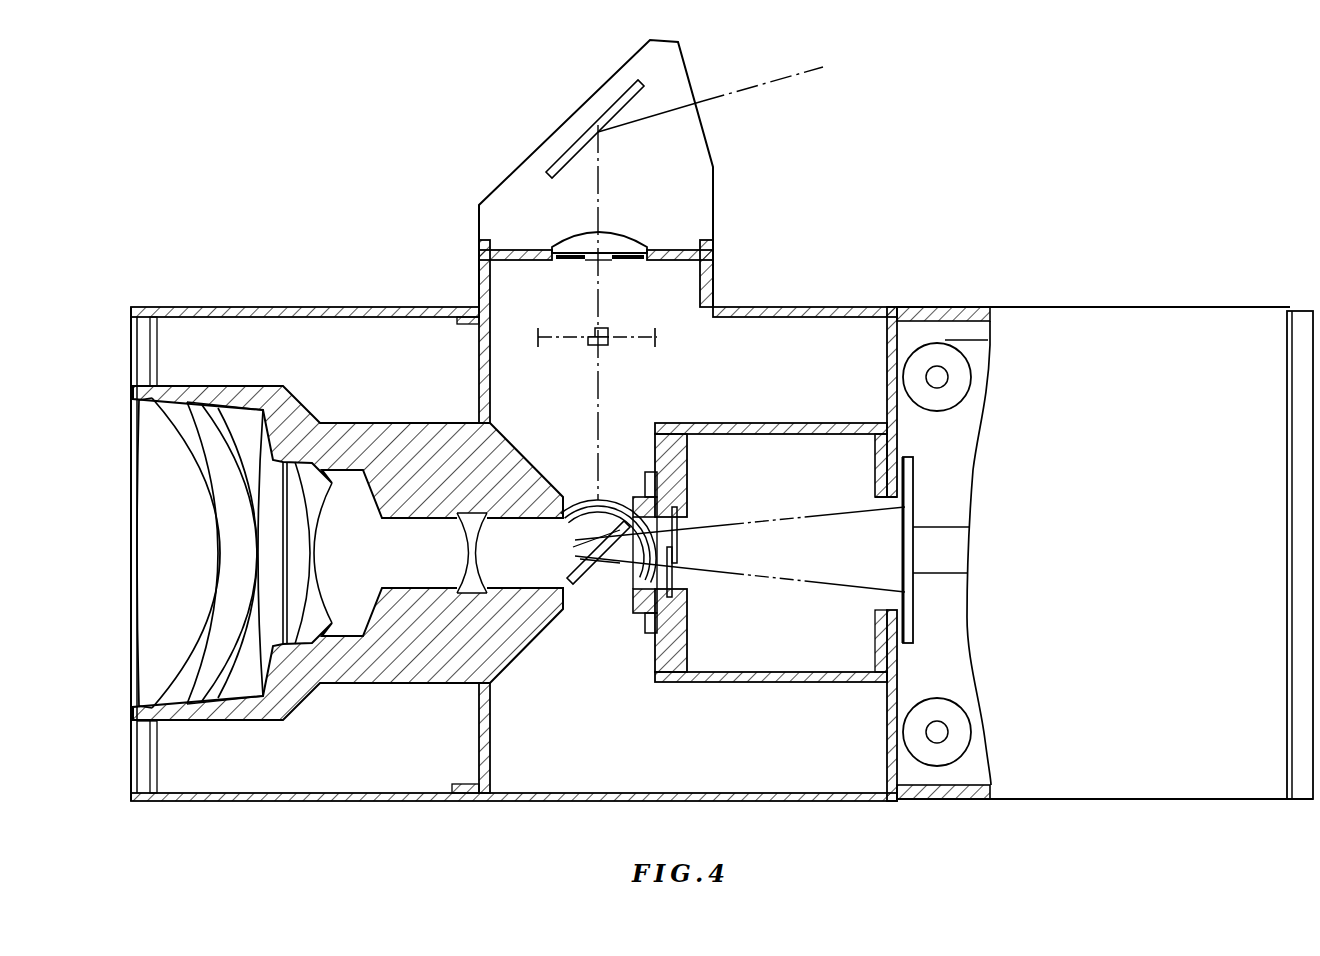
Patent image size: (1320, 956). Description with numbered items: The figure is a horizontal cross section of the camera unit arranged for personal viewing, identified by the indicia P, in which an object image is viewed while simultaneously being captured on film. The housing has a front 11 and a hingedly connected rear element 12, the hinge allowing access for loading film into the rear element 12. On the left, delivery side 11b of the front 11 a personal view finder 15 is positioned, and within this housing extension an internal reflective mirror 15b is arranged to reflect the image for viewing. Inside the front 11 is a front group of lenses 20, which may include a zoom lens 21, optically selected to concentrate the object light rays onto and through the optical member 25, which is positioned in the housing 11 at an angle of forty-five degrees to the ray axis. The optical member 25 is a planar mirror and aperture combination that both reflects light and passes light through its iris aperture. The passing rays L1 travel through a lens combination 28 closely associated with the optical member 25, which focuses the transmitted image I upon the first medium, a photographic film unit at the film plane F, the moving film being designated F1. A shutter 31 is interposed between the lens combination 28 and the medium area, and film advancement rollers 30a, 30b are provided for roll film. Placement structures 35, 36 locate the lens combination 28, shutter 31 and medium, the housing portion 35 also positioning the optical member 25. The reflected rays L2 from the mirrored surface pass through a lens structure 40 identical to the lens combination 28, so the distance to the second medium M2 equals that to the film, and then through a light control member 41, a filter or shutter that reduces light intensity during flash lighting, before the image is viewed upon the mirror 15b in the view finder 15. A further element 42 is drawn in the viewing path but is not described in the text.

The front housing element 11 is at (262, 299).
The delivery side 11b is at (416, 307).
The rear housing element 12 is at (1128, 307).
The personal view finder 15 is at (706, 55).
The internal reflective mirror 15b is at (626, 100).
The second medium M2 is at (622, 233).
The light control member 41 is at (580, 262).
The image I is at (613, 262).
The diaphragm plate 42 is at (627, 346).
The reflected light rays L2 is at (598, 397).
The personal viewing system P is at (802, 276).
The front group of lenses 20 is at (318, 420).
The zoom lens 21 is at (228, 390).
The optical member 25 is at (587, 577).
The lens structure 40 is at (578, 486).
The housing portion 35 is at (641, 496).
The lens combination 28 is at (637, 592).
The shutter 31 is at (680, 521).
The passing light rays L1 is at (803, 578).
The placement structure 36 is at (780, 683).
The film F1 is at (897, 445).
The film plane F is at (897, 602).
The film advancement roller 30a is at (960, 376).
The film advancement roller 30b is at (957, 737).